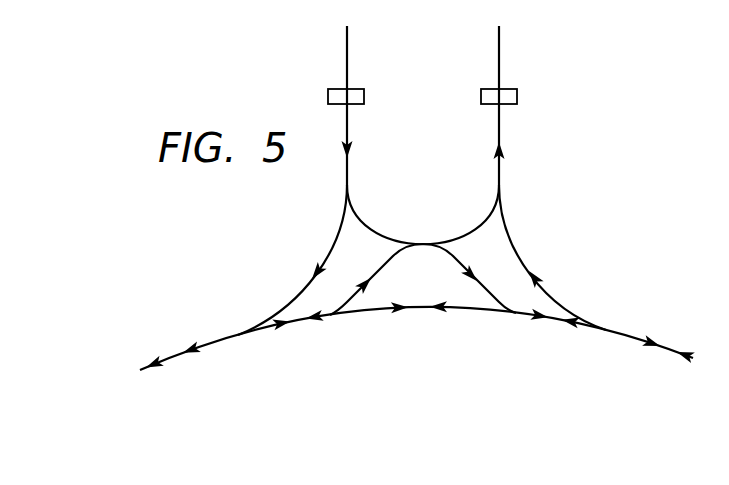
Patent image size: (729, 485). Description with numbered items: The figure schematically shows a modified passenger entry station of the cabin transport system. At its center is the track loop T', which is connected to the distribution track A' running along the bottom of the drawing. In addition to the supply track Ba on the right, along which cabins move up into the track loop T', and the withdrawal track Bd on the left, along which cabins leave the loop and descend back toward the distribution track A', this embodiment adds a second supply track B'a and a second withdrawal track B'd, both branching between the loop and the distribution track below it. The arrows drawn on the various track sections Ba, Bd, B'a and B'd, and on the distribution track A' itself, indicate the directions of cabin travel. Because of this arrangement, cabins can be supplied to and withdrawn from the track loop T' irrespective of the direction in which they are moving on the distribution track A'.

The withdrawal track Bd is at (329, 250).
The supply track Ba is at (517, 240).
The track loop T' is at (423, 211).
The second supply track B'a is at (376, 302).
The second withdrawal track B'd is at (469, 302).
The distribution track A' is at (425, 336).